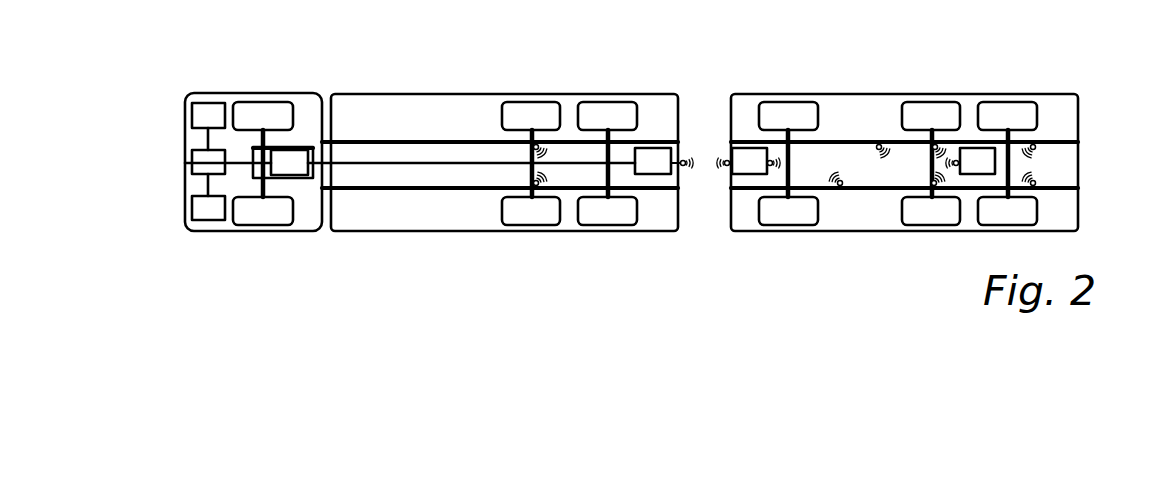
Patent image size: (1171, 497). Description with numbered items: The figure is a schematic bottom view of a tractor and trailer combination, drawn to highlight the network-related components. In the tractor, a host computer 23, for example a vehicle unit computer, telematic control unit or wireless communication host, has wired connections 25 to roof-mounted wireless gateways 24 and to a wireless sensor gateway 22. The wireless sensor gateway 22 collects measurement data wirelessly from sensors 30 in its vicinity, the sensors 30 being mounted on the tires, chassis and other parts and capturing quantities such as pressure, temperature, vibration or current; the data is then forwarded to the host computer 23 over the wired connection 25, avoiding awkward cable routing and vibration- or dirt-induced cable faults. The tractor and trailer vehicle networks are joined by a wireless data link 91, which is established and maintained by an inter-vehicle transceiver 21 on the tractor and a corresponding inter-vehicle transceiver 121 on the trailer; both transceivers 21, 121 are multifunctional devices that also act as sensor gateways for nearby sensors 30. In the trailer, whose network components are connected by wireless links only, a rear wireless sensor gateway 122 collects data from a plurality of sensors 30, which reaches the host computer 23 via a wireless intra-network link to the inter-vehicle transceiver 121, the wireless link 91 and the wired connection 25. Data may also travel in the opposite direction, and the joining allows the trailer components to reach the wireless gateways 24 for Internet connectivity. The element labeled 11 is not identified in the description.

The vehicle combination / first trailer 11 is at (465, 140).
The inter-vehicle transceiver 21 is at (662, 148).
The wireless sensor gateway 22 is at (295, 148).
The host computer 23 is at (186, 164).
The wireless gateway 24 is at (208, 102).
The wired connection 25 is at (395, 160).
The sensors 30 is at (541, 181).
The wireless data link 91 is at (726, 167).
The inter-vehicle transceiver 121 is at (747, 150).
The rear wireless sensor gateway 122 is at (965, 148).